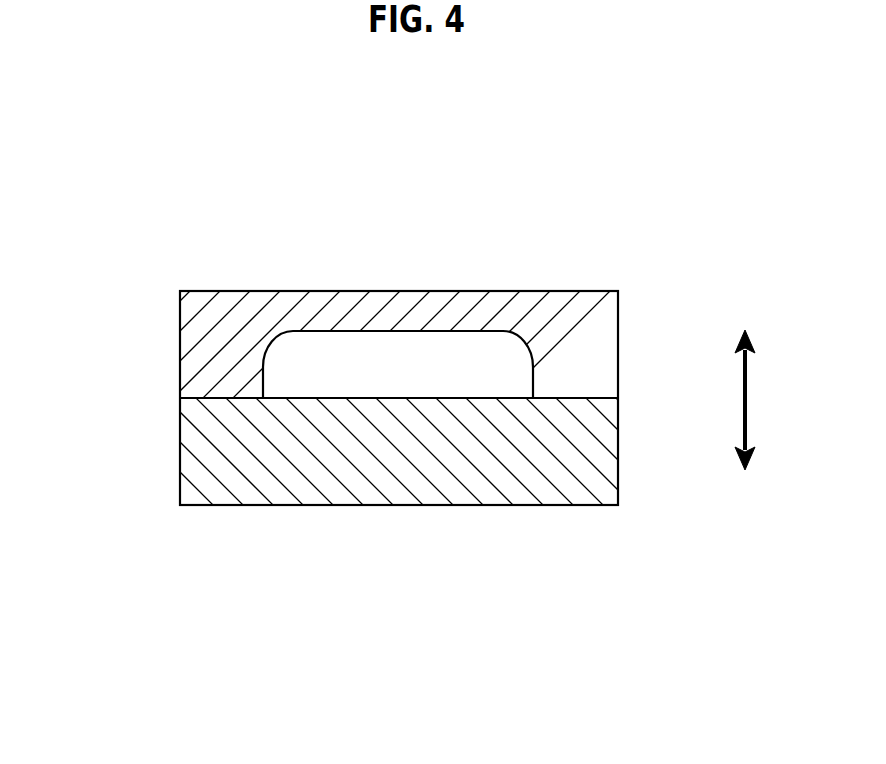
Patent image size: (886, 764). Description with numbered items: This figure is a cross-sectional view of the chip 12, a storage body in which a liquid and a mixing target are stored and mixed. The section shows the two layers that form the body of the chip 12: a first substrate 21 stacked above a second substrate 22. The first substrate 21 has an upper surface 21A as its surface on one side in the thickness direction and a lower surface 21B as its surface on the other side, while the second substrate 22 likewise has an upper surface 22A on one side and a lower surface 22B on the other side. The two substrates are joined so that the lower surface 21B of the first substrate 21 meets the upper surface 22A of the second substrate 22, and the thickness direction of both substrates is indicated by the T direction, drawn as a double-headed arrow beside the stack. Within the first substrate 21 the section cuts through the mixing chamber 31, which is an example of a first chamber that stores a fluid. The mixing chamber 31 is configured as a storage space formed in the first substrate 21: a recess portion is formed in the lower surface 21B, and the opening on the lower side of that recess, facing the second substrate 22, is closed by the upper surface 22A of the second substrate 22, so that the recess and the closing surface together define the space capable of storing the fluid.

The chip 12 is at (115, 212).
The first substrate 21 is at (188, 340).
The second substrate 22 is at (187, 465).
The mixing chamber 31 is at (412, 332).
The upper surface 21A is at (593, 291).
The upper surface 22A is at (580, 398).
The lower surface 21B is at (607, 400).
The lower surface 22B is at (580, 505).
The T direction T is at (748, 398).